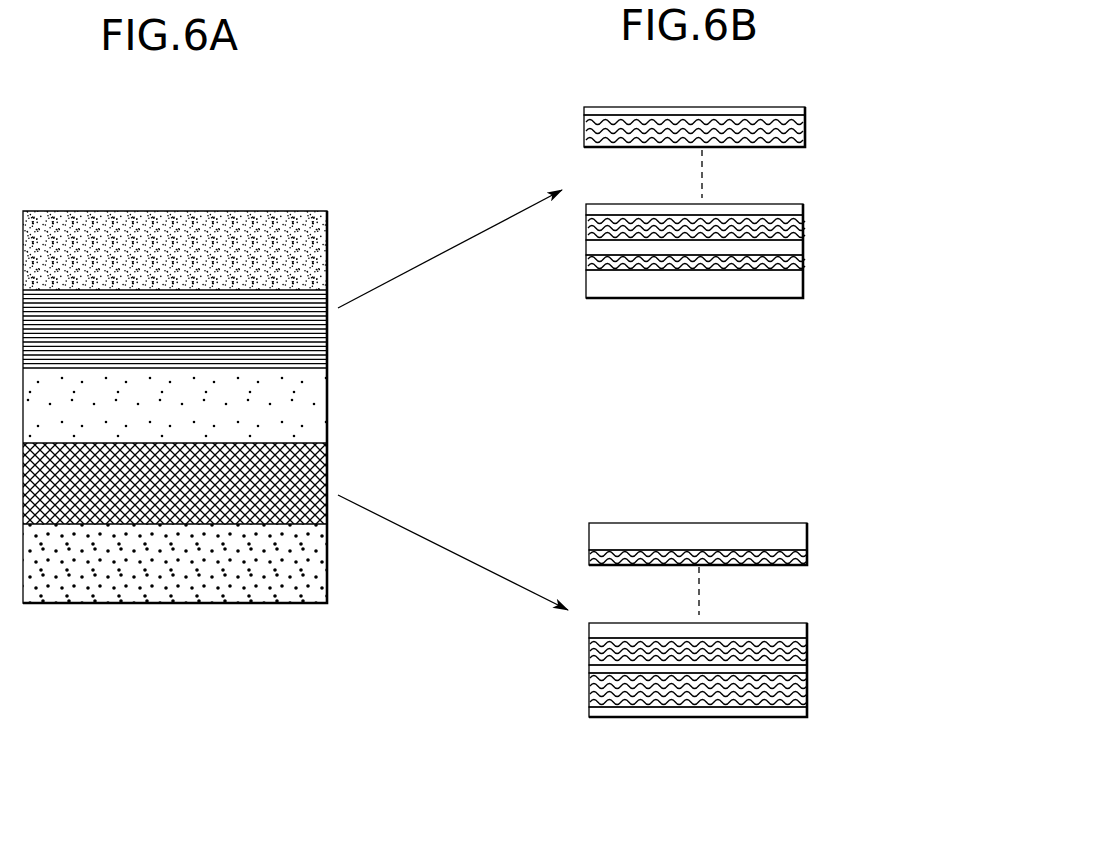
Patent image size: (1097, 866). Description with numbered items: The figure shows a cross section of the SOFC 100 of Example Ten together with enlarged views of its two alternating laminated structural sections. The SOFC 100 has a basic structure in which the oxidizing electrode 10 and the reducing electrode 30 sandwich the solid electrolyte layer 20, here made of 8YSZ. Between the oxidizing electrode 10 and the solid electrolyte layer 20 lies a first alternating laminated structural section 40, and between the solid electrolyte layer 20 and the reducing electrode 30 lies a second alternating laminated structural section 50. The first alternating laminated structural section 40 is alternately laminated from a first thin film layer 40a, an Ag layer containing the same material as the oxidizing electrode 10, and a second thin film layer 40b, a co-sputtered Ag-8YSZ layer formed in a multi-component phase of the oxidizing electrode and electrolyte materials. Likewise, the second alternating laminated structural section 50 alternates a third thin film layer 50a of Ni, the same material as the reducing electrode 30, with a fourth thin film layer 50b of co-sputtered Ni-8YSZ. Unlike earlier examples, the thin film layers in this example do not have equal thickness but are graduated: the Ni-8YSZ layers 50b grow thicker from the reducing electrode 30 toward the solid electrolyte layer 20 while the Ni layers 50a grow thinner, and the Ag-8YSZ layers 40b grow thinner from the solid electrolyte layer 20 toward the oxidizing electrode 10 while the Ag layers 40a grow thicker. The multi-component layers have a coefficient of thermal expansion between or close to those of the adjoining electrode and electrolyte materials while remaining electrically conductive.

In FIG. 6A, the SOFC 100 is at (278, 173).
In FIG. 6A, the oxidizing electrode 10 is at (313, 242).
In FIG. 6A, the first alternating laminated structural section 40 is at (317, 332).
In FIG. 6B, the first thin film layer 40a is at (805, 135).
In FIG. 6B, the second thin film layer 40b is at (805, 108).
In FIG. 6A, the solid electrolyte layer 20 is at (315, 405).
In FIG. 6A, the second alternating laminated structural section 50 is at (315, 466).
In FIG. 6B, the third thin film layer 50a is at (807, 553).
In FIG. 6B, the fourth thin film layer 50b is at (807, 527).
In FIG. 6A, the reducing electrode 30 is at (317, 568).